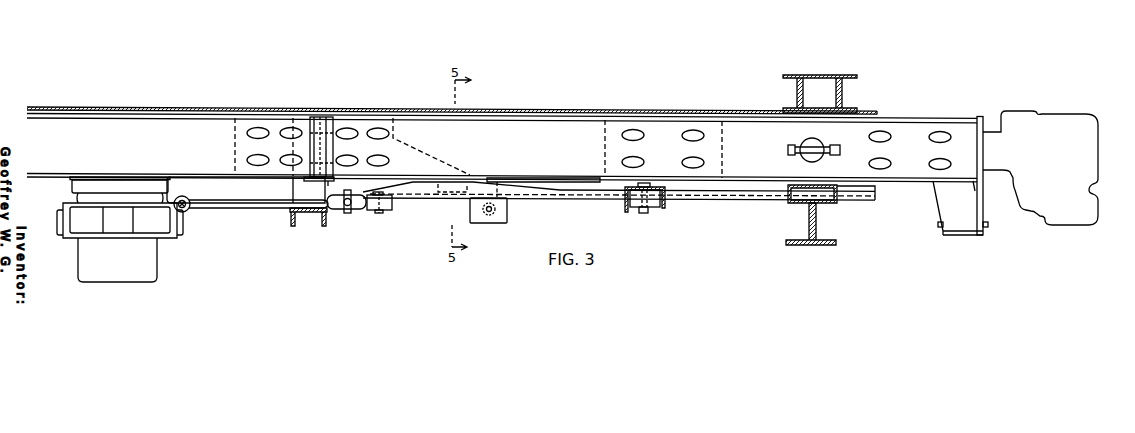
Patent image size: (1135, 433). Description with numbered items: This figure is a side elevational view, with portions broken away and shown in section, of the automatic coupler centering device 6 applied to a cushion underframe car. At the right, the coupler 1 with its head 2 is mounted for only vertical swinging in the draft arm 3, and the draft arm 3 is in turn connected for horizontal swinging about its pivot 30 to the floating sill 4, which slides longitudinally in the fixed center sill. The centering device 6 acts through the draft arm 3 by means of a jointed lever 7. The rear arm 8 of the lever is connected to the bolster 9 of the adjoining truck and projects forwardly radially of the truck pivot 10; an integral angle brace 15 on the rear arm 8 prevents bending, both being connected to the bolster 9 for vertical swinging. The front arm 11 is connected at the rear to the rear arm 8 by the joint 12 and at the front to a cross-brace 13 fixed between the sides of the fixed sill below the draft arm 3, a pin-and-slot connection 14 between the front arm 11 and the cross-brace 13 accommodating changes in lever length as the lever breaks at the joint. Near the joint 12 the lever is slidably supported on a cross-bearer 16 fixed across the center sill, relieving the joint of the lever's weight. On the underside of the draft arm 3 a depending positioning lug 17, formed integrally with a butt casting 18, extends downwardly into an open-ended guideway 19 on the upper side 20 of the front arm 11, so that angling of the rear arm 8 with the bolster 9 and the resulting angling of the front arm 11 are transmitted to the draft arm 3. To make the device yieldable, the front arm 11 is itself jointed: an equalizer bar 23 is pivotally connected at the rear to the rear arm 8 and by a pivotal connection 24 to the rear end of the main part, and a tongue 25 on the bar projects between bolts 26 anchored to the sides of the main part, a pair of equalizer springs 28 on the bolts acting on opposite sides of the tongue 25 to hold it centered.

The coupler 1 is at (1073, 106).
The head 2 is at (1033, 111).
The draft arm 3 is at (913, 117).
The sill 4 is at (134, 108).
The automatic centering device 6 is at (551, 210).
The jointed lever 7 is at (418, 213).
The rear arm 8 is at (248, 210).
The bolster 9 is at (78, 257).
The truck pivot 10 is at (118, 177).
The front arm 11 is at (571, 202).
The joint 12 is at (350, 212).
The cross-brace 13 is at (668, 207).
The pin-and-slot connection 14 is at (644, 209).
The angle brace 15 is at (264, 203).
The cross-bearer 16 is at (325, 224).
The positioning lug 17 is at (448, 182).
The butt casting 18 is at (402, 145).
The guideway 19 is at (479, 182).
The upper side 20 is at (517, 192).
The equalizer bar 23 is at (441, 205).
The pivotal connection 24 is at (390, 213).
The tongue 25 is at (510, 208).
The bolts 26 is at (485, 215).
The equalizer springs 28 is at (494, 215).
The pivot of the draft arm 30 is at (317, 117).